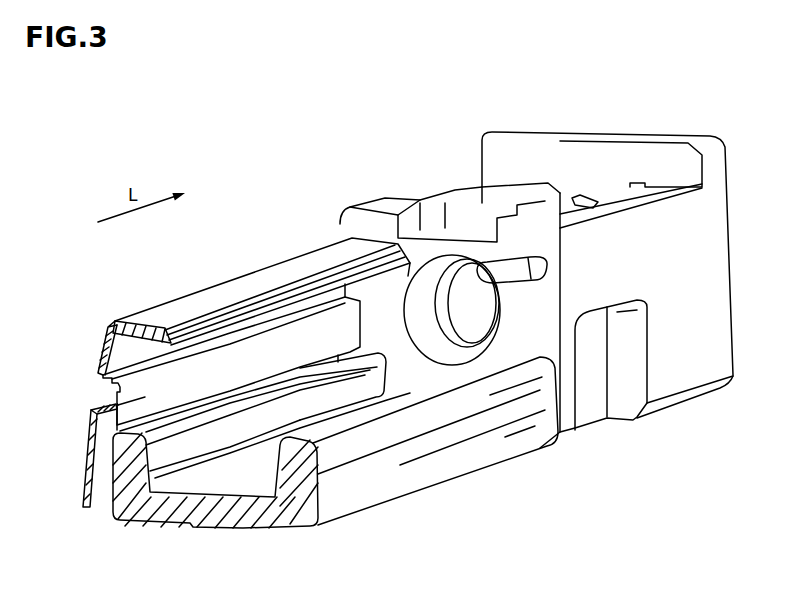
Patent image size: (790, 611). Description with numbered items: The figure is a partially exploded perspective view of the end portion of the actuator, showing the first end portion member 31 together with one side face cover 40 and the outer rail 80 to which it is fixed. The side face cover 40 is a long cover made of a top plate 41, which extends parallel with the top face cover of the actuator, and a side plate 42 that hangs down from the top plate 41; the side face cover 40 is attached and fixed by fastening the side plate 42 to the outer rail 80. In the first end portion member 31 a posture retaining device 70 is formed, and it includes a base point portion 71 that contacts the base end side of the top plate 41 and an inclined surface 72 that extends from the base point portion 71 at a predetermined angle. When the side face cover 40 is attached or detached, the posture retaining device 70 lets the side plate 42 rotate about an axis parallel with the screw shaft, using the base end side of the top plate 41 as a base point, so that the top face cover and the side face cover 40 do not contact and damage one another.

The first end portion member 31 is at (735, 240).
The side face cover 40 is at (103, 344).
The top plate 41 is at (147, 327).
The side plate 42 is at (90, 452).
The posture retaining device 70 is at (430, 254).
The base point portion 71 is at (590, 201).
The inclined surface 72 is at (507, 252).
The outer rail 80 is at (217, 507).